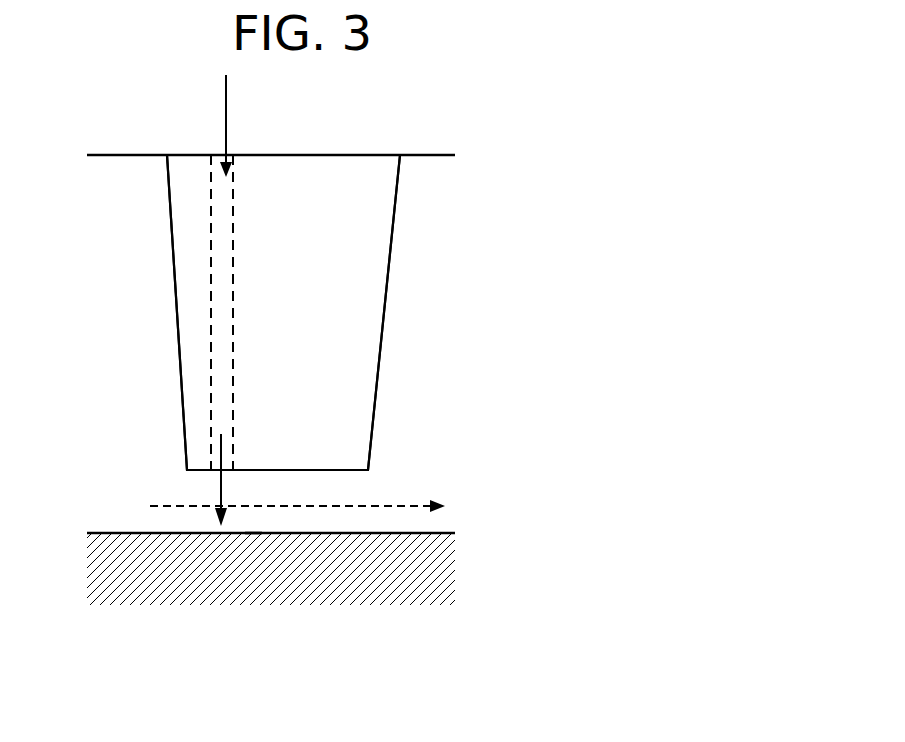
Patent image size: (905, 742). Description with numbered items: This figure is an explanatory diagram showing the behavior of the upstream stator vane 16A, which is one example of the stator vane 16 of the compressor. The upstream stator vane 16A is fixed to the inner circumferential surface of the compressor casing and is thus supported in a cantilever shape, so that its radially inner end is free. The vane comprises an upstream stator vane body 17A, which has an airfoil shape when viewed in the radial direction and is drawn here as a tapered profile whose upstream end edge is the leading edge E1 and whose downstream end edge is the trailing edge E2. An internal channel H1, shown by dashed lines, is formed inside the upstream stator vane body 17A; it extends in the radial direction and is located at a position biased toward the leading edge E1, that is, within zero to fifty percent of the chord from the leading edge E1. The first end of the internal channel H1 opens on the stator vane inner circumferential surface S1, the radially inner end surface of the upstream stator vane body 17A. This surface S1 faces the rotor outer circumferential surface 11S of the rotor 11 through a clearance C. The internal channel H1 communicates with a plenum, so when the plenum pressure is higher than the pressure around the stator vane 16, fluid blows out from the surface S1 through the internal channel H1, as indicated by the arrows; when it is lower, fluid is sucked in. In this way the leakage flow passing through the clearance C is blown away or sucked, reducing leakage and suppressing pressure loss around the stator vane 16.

The upstream stator vane body 17A is at (376, 193).
The upstream stator vane 16A is at (378, 253).
The stator vane 16 is at (377, 312).
The leading edge E1 is at (176, 302).
The trailing edge E2 is at (383, 325).
The internal channel H1 is at (222, 360).
The stator vane inner circumferential surface S1 is at (343, 470).
The rotor outer circumferential surface 11S is at (433, 533).
The rotor 11 is at (432, 568).
The clearance C is at (253, 523).